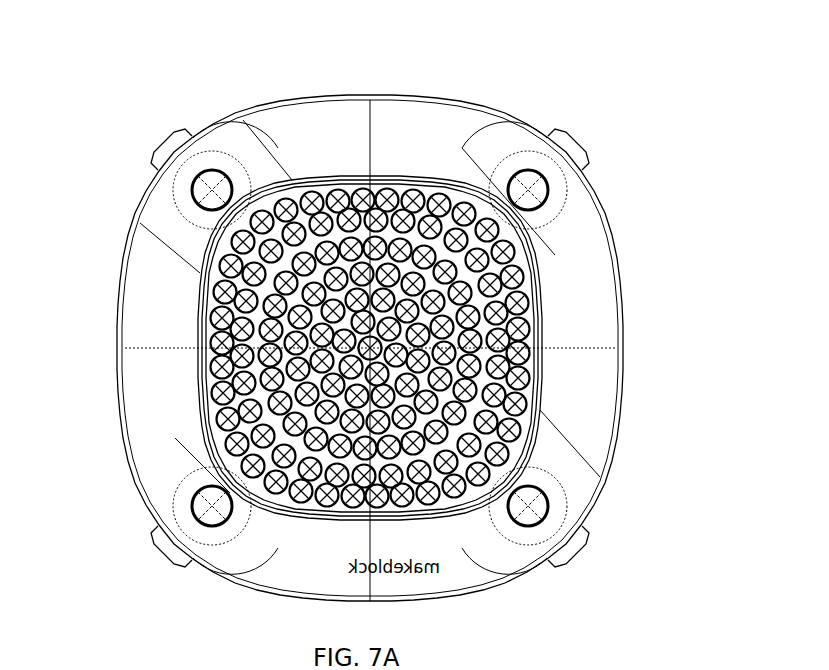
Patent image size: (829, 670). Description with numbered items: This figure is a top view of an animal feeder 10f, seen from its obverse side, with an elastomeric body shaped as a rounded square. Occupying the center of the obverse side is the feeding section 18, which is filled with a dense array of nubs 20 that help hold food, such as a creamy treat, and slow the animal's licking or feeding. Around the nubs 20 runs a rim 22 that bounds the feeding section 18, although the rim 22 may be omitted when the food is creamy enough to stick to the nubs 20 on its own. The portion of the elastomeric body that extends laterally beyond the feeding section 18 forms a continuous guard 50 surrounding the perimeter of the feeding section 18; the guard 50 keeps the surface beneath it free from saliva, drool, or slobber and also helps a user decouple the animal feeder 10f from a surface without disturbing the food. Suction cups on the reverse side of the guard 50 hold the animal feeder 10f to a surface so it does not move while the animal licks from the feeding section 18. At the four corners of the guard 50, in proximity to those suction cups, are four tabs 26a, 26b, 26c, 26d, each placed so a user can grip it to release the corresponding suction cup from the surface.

The animal feeder 10f is at (185, 62).
The feeding section 18 is at (567, 297).
The nubs 20 is at (490, 390).
The rim 22 is at (207, 392).
The tab 26a is at (164, 136).
The tab 26b is at (578, 145).
The tab 26c is at (582, 546).
The tab 26d is at (158, 538).
The guard 50 is at (382, 120).